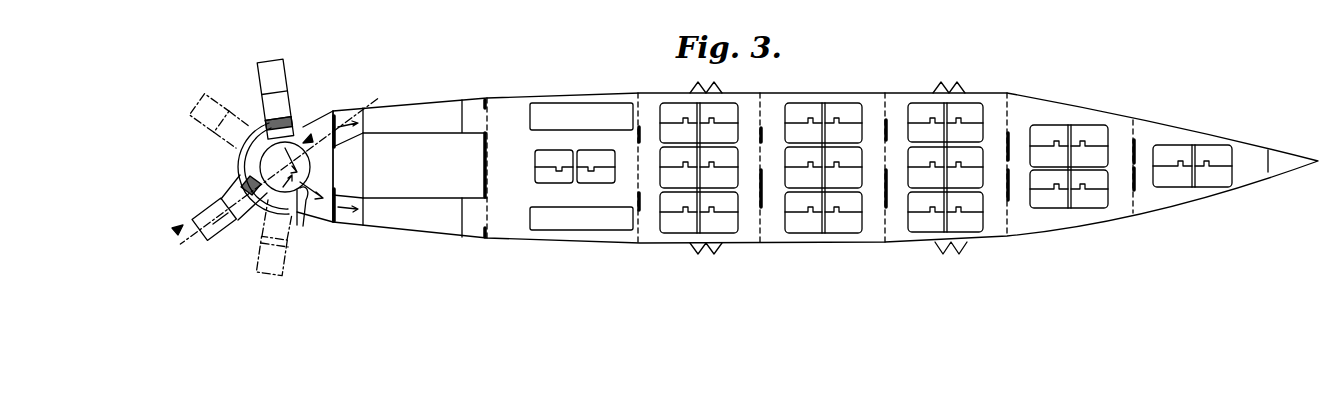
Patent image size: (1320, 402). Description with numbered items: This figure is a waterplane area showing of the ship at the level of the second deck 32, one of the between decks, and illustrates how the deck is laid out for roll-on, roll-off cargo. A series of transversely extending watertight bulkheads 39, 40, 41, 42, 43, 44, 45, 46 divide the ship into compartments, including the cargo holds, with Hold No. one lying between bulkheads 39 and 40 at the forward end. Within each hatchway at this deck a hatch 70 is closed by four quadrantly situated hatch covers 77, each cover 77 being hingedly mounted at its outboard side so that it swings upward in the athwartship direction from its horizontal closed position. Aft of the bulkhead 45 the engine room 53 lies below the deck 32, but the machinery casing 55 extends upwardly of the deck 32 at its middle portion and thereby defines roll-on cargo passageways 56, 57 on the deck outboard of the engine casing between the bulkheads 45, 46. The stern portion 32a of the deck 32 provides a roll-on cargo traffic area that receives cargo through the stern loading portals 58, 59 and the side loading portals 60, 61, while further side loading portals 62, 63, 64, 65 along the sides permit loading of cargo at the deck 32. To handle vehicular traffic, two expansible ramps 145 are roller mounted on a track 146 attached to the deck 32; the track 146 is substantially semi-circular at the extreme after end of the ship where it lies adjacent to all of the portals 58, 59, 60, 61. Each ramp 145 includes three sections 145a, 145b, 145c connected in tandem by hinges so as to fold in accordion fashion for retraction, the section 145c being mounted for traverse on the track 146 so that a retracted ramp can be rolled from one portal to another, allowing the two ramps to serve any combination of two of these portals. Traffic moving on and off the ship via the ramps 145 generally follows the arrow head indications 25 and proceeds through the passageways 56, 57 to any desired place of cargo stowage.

The air flow direction arrows 25 is at (275, 183).
The second deck 32 is at (1173, 126).
The stern portion of the deck 32a is at (336, 111).
The watertight bulkhead 39 is at (1267, 175).
The watertight bulkhead 40 is at (1130, 222).
The watertight bulkhead 41 is at (1007, 238).
The watertight bulkhead 42 is at (885, 243).
The watertight bulkhead 43 is at (760, 244).
The watertight bulkhead 44 is at (619, 244).
The watertight bulkhead 45 is at (472, 240).
The watertight bulkhead 46 is at (338, 222).
The engine room 53 is at (425, 165).
The machinery casing 55 is at (425, 129).
The roll-on cargo passageway 56 is at (425, 117).
The roll-on cargo passageway 57 is at (412, 217).
The stern loading portal 58 is at (246, 114).
The stern loading portal 59 is at (249, 223).
The side loading portal 60 is at (283, 117).
The side loading portal 61 is at (290, 240).
The side loading portal 62 is at (709, 88).
The side loading portal 63 is at (957, 88).
The side loading portal 64 is at (700, 250).
The side loading portal 65 is at (952, 249).
The hatch 70 is at (535, 168).
The hatch cover 77 is at (589, 158).
The expansible ramp 145 is at (257, 72).
The ramp section 145a is at (268, 62).
The ramp section 145b is at (283, 94).
The ramp section 145c is at (288, 128).
The track 146 is at (306, 223).